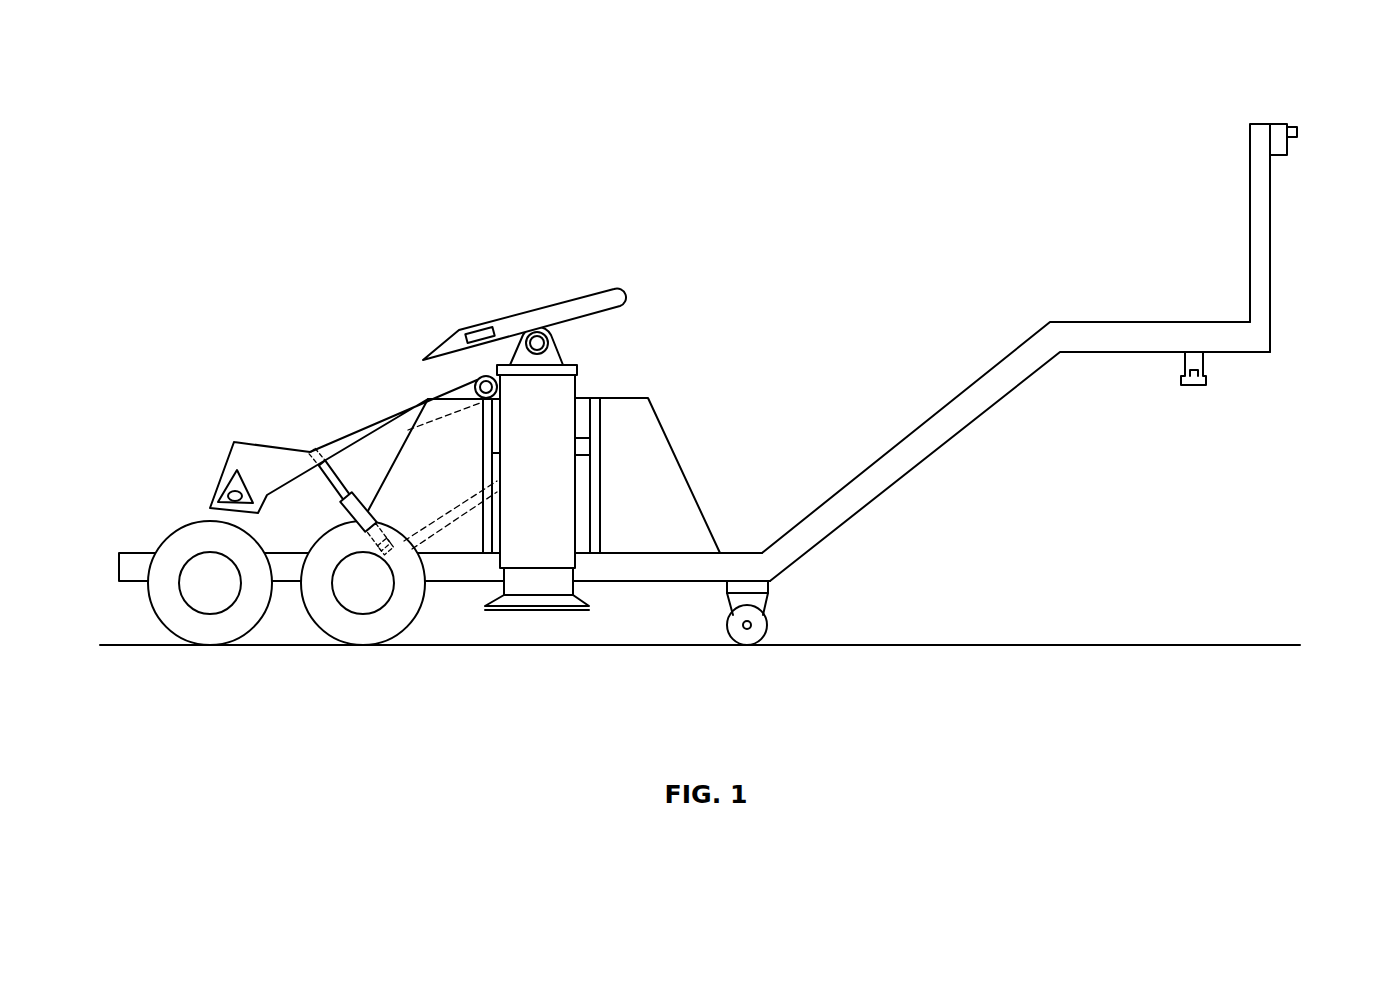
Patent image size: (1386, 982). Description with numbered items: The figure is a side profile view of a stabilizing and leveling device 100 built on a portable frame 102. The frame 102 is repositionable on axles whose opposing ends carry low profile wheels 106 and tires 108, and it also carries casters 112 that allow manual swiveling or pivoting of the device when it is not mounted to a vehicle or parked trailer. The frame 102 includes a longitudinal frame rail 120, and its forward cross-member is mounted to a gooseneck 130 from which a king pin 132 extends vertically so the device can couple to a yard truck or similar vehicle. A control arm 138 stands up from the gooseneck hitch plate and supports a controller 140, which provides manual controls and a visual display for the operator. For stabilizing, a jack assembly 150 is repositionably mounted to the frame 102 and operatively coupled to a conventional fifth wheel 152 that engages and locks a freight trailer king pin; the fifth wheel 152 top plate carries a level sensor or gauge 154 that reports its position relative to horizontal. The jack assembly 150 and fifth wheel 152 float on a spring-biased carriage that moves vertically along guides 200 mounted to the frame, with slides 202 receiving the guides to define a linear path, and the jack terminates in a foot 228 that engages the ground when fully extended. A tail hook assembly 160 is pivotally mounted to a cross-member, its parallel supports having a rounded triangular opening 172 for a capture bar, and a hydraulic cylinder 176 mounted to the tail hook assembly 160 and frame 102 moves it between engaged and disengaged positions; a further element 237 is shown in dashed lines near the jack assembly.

The stabilizing and leveling device 100 is at (258, 103).
The portable frame 102 is at (648, 567).
The low profile wheels 106 is at (215, 600).
The tires 108 is at (180, 622).
The casters 112 is at (752, 616).
The frame rail 120 is at (445, 568).
The gooseneck 130 is at (895, 463).
The king pin 132 is at (1192, 388).
The control arm 138 is at (1263, 265).
The controller 140 is at (1277, 143).
The jack assembly 150 is at (557, 388).
The fifth wheel 152 is at (560, 312).
The level sensor or level gauge 154 is at (478, 323).
The tail hook assembly 160 is at (282, 462).
The rounded triangular opening 172 is at (226, 468).
The hydraulic cylinder 176 is at (340, 478).
The guides 200 is at (682, 483).
The slides 202 is at (582, 438).
The foot 228 is at (560, 603).
The hidden cylinder 237 is at (488, 482).